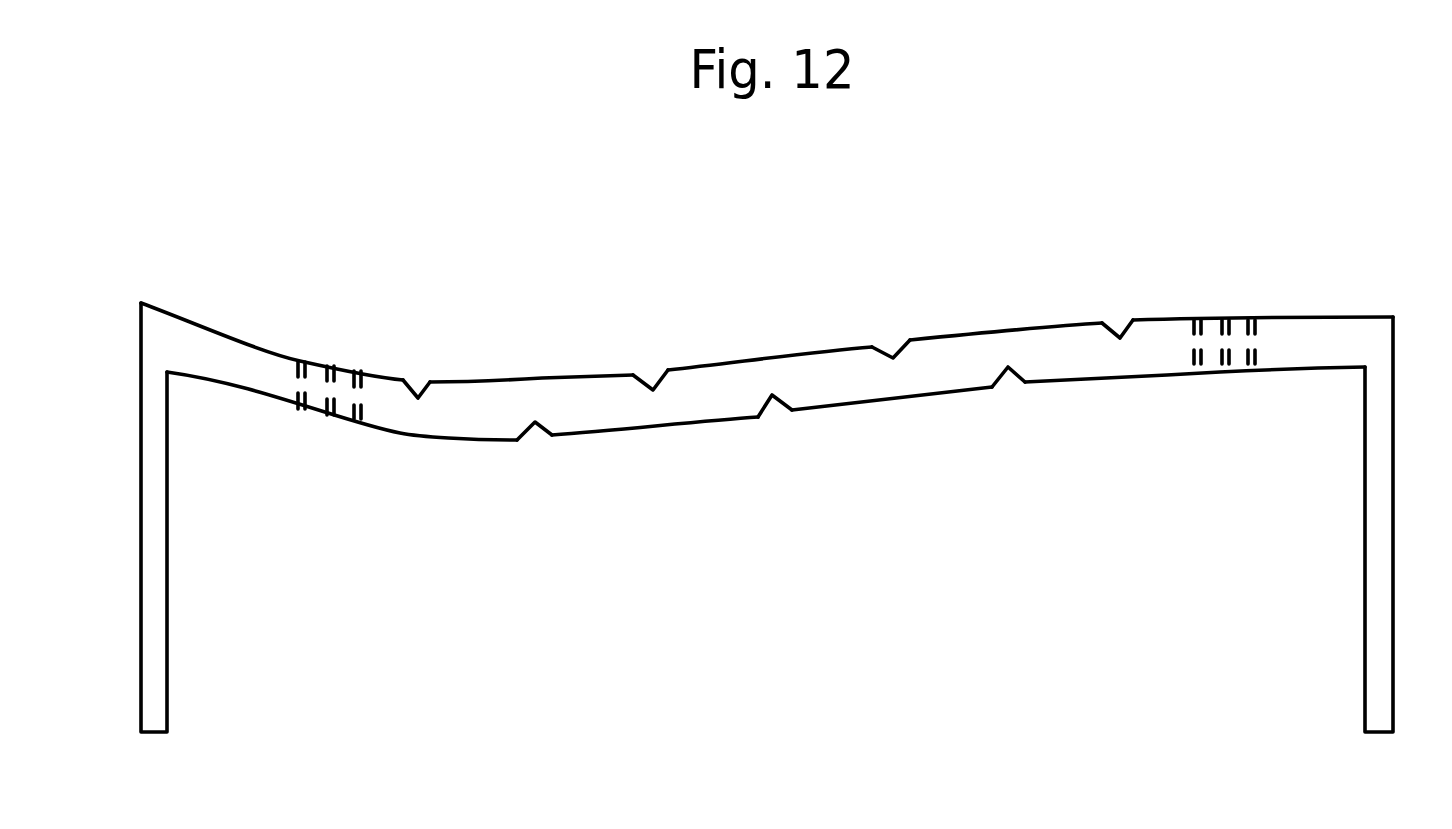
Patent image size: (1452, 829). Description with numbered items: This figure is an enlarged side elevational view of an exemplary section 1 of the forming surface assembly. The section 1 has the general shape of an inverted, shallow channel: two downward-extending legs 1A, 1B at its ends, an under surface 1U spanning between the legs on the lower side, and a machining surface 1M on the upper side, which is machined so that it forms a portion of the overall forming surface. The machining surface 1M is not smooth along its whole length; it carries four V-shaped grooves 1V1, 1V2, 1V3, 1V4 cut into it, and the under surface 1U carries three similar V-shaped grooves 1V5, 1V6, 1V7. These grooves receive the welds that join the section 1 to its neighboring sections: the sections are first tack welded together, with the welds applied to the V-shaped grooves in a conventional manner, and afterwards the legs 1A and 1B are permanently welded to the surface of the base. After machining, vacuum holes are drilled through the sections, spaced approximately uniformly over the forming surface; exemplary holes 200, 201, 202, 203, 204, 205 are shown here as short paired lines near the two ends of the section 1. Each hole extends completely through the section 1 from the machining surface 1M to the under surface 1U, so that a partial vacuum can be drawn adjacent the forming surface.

The section 1 is at (762, 488).
The leg 1A is at (141, 478).
The leg 1B is at (1397, 532).
The machining surface 1M is at (767, 321).
The under surface 1U is at (766, 429).
The V-shaped groove 1V1 is at (402, 376).
The V-shaped groove 1V2 is at (642, 338).
The V-shaped groove 1V3 is at (870, 345).
The V-shaped groove 1V4 is at (1102, 322).
The V-shaped groove 1V5 is at (520, 440).
The V-shaped groove 1V6 is at (758, 417).
The V-shaped groove 1V7 is at (993, 387).
The vacuum hole 200 is at (297, 360).
The vacuum hole 201 is at (328, 417).
The vacuum hole 202 is at (357, 373).
The vacuum hole 203 is at (1193, 318).
The vacuum hole 204 is at (1226, 367).
The vacuum hole 205 is at (1258, 317).